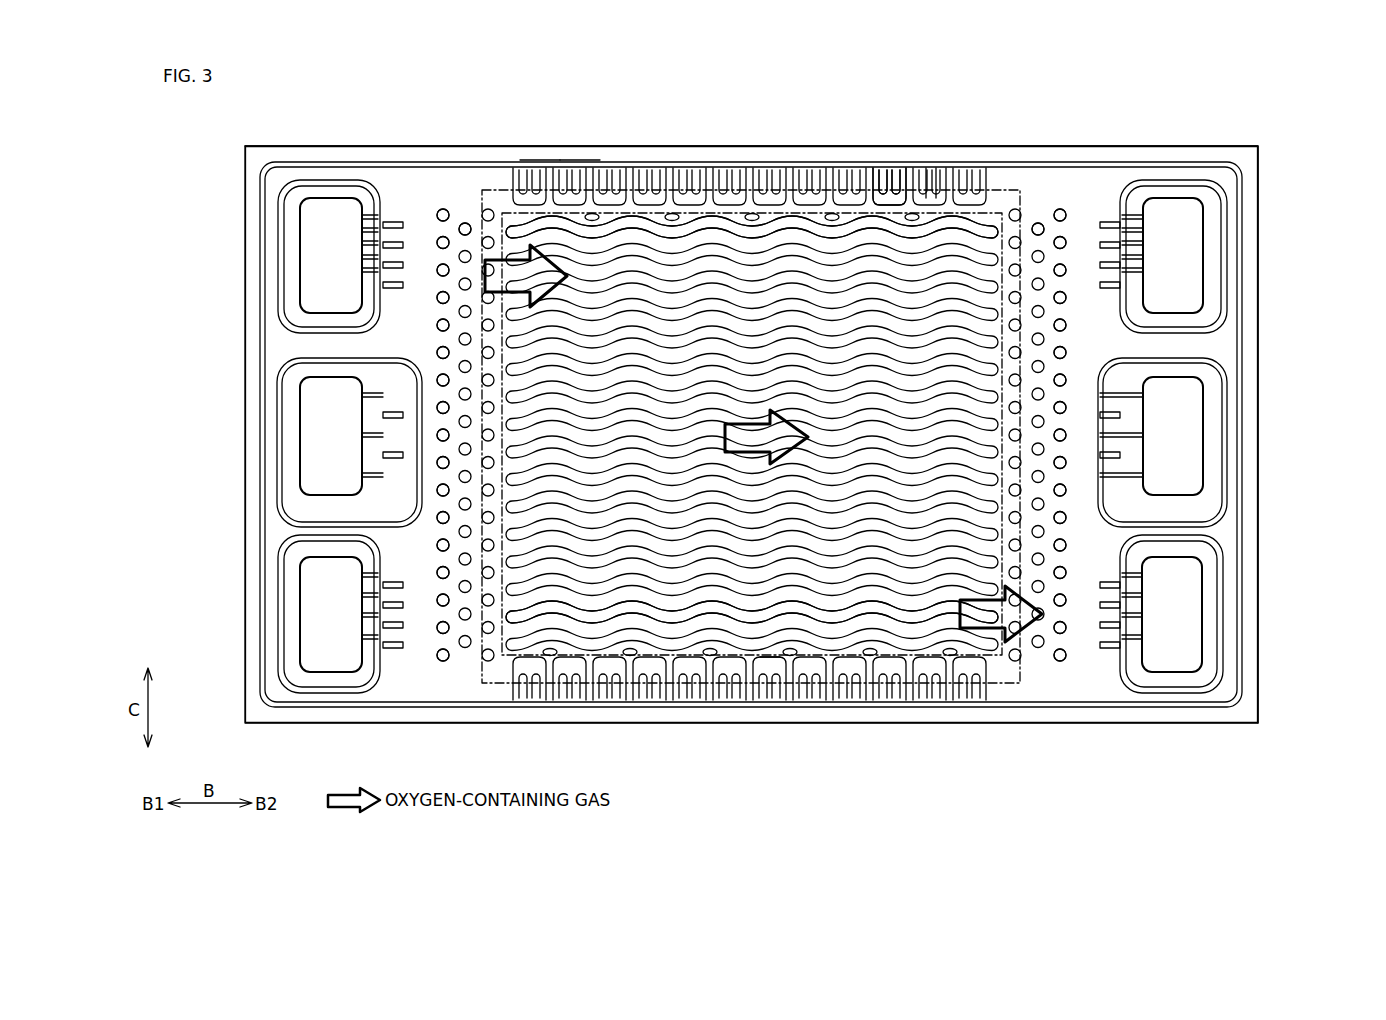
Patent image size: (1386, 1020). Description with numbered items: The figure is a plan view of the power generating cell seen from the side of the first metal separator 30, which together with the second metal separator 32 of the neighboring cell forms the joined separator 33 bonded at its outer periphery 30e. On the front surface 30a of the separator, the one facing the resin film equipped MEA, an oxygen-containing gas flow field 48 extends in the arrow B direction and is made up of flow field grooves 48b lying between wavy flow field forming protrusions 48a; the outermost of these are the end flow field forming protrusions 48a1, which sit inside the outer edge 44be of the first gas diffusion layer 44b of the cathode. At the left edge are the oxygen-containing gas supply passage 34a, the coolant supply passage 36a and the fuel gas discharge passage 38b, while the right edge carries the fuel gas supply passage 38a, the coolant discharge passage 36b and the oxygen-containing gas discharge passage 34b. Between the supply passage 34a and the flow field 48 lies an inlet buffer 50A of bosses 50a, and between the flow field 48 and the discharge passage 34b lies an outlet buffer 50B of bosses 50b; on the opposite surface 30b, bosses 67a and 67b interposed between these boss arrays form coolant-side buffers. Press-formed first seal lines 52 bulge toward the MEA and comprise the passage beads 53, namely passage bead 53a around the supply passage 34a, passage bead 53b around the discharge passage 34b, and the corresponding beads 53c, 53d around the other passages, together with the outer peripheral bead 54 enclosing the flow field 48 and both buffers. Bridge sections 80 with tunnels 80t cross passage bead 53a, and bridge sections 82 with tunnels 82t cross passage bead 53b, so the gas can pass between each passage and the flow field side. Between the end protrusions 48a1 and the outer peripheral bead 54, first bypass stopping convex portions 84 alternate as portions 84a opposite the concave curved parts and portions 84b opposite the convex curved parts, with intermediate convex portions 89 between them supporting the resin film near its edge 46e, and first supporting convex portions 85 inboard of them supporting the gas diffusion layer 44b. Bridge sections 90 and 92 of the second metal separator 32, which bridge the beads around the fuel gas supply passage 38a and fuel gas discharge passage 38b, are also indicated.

The first metal separator 30 is at (615, 133).
The front surface 30a is at (530, 160).
The surface on opposite side 30b is at (576, 160).
The outer peripheral edge 30e is at (262, 168).
The second metal separator 32 is at (636, 133).
The joined separator 33 is at (1231, 82).
The oxygen-containing gas supply passage 34a is at (312, 228).
The oxygen-containing gas discharge passage 34b is at (1185, 600).
The coolant supply passage 36a is at (312, 414).
The coolant discharge passage 36b is at (1185, 414).
The fuel gas supply passage 38a is at (1185, 243).
The fuel gas discharge passage 38b is at (312, 596).
The first gas diffusion layer 44b is at (494, 175).
The outer edge of the first gas diffusion layer 44be is at (540, 190).
The resin frame edge 46e is at (768, 672).
The oxygen-containing gas flow field 48 is at (745, 98).
The flow field forming protrusions 48a is at (690, 240).
The end flow field forming protrusions 48a1 is at (903, 175).
The flow field grooves 48b is at (725, 215).
The inlet buffer 50A is at (482, 490).
The bosses 50a is at (443, 435).
The outlet buffer 50B is at (1021, 517).
The bosses 50b is at (1060, 435).
The first seal lines 52 is at (1271, 765).
The passage beads 53 is at (282, 372).
The passage bead 53a is at (282, 240).
The passage bead 53b is at (1195, 690).
The passage bead around fuel gas supply passage 53c is at (1218, 218).
The passage bead around fuel gas discharge passage 53d is at (282, 638).
The outer peripheral bead 54 is at (1158, 706).
The bosses 67a is at (465, 223).
The bosses 67b is at (1038, 223).
The bridge sections 80 is at (410, 179).
The tunnels 80t is at (405, 242).
The bridge sections 82 is at (1100, 663).
The tunnels 82t is at (1133, 635).
The first bypass stopping convex portions 84 is at (668, 685).
The first bypass stopping convex portions 84a is at (810, 175).
The first bypass stopping convex portions 84b is at (890, 175).
The first supporting convex portions 85 is at (755, 213).
The intermediate convex portions 89 is at (936, 168).
The bridge sections 90 is at (1114, 178).
The bridge sections 92 is at (399, 671).